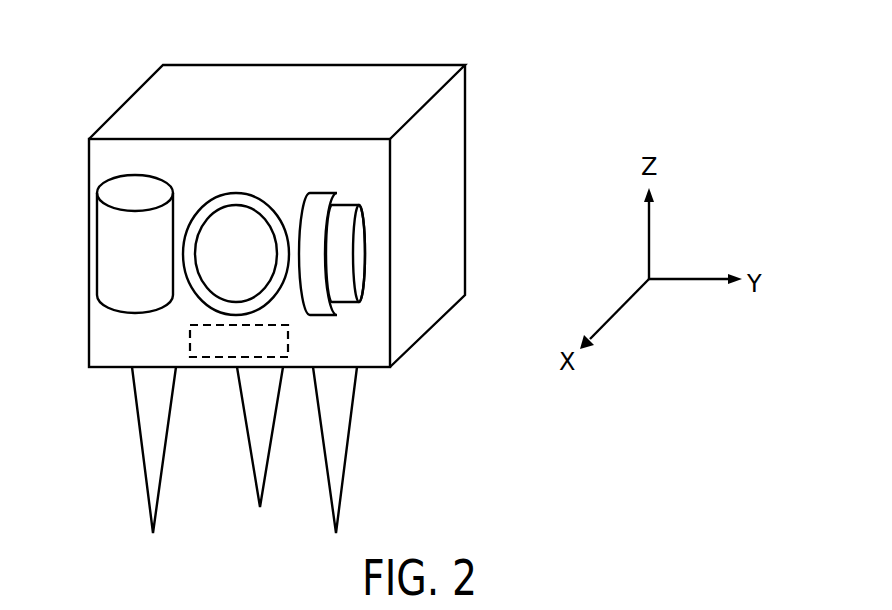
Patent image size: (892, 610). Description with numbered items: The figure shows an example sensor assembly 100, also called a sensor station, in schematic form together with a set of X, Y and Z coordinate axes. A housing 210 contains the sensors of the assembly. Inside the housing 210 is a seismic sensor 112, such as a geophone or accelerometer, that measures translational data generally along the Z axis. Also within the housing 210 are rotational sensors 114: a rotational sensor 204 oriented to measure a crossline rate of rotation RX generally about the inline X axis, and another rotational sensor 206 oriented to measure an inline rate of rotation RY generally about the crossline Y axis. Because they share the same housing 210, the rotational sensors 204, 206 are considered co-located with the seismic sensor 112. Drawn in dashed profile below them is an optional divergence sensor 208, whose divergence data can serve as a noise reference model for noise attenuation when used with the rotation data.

The sensor assembly 100 is at (514, 33).
The seismic sensor 112 is at (103, 184).
The rotational sensors 114 is at (365, 172).
The rotational sensor 204 is at (197, 298).
The rotational sensor 206 is at (367, 288).
The divergence sensor 208 is at (238, 359).
The housing 210 is at (430, 330).